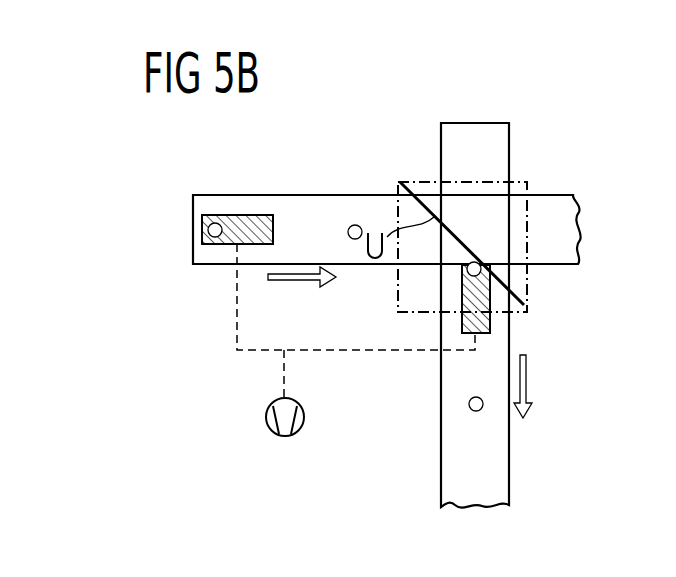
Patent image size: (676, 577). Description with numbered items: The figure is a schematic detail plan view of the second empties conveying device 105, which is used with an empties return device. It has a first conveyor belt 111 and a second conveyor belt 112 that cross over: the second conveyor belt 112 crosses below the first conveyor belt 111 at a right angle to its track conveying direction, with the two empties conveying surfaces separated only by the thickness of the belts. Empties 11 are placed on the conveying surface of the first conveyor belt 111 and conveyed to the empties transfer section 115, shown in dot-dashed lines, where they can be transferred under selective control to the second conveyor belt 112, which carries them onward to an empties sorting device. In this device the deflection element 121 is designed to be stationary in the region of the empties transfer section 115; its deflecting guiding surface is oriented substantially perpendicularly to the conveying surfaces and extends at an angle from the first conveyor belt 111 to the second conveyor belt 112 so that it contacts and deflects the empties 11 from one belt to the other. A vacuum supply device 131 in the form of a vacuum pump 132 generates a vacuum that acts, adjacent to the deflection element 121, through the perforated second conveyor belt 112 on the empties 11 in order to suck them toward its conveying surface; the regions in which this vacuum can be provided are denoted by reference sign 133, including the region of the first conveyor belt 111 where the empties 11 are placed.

The second empties conveying device 105 is at (597, 160).
The first conveyor belt 111 is at (275, 195).
The second conveyor belt 112 is at (509, 443).
The empties transfer section 115 is at (527, 290).
The deflection element 121 is at (470, 250).
The empties 11 is at (355, 224).
The vacuum supply device 131 is at (206, 403).
The vacuum pump 132 is at (304, 415).
The region in which the vacuum can be provided 133 is at (214, 238).